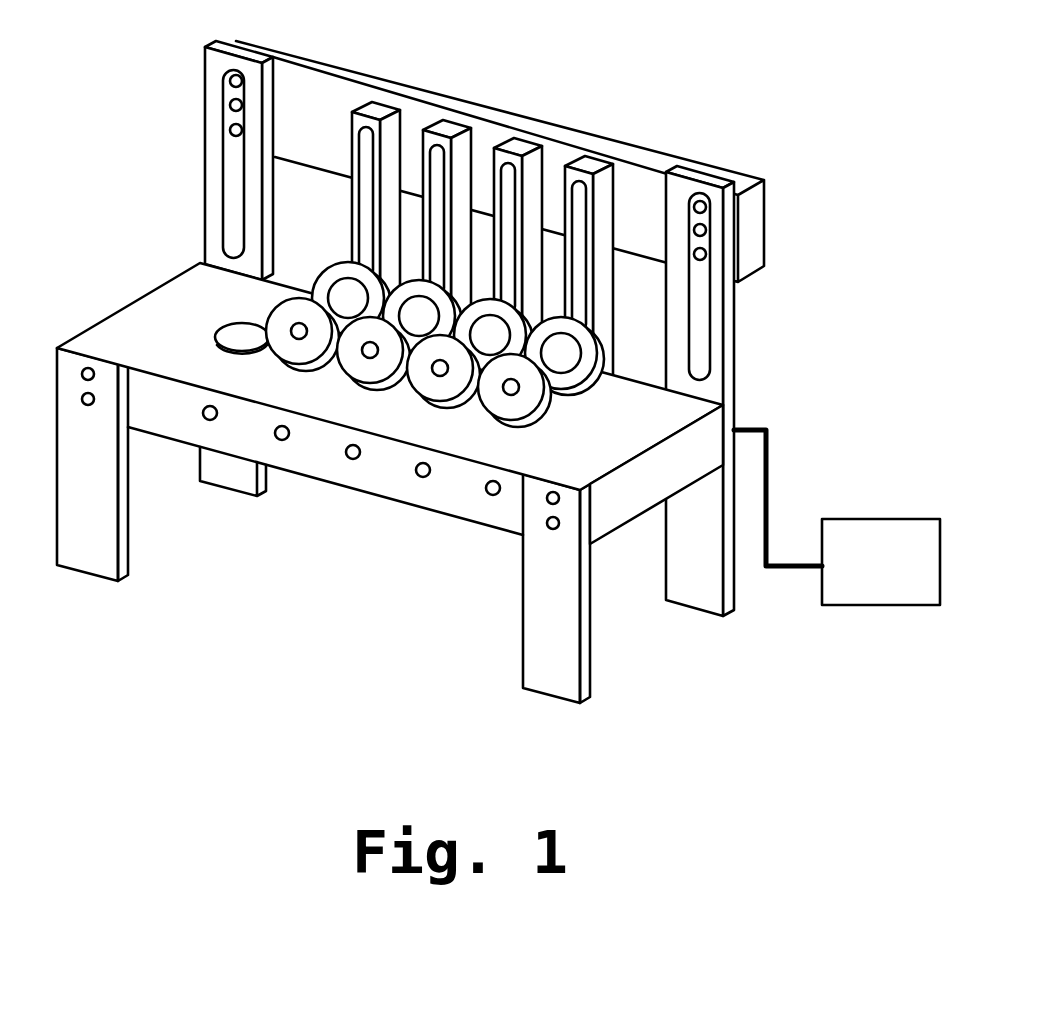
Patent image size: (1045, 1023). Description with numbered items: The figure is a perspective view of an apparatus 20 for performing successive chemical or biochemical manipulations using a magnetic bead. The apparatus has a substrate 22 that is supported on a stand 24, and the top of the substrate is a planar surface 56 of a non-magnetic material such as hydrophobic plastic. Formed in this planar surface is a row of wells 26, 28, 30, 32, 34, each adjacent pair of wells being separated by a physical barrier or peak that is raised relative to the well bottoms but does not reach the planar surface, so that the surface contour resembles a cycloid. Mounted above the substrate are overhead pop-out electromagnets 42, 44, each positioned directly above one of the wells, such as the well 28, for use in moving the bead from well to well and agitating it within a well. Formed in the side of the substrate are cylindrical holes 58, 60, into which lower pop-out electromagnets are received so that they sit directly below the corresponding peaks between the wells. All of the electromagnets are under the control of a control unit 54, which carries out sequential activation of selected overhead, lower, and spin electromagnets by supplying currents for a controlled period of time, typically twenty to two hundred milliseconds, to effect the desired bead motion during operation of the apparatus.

The apparatus 20 is at (792, 179).
The substrate 22 is at (652, 404).
The stand 24 is at (492, 633).
The well 26 is at (226, 324).
The well 28 is at (288, 363).
The well 30 is at (375, 390).
The well 32 is at (458, 407).
The well 34 is at (523, 423).
The overhead pop-out electromagnet 42 is at (383, 280).
The overhead pop-out electromagnet 44 is at (455, 303).
The control unit 54 is at (863, 607).
The planar surface 56 is at (610, 457).
The hole 58 is at (203, 417).
The hole 60 is at (282, 447).